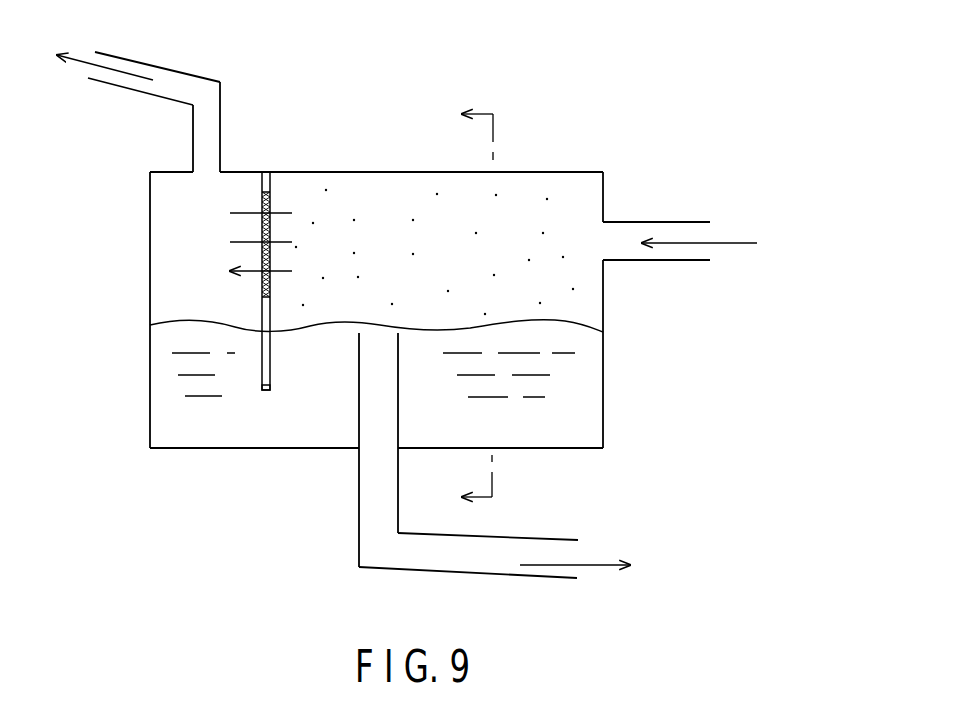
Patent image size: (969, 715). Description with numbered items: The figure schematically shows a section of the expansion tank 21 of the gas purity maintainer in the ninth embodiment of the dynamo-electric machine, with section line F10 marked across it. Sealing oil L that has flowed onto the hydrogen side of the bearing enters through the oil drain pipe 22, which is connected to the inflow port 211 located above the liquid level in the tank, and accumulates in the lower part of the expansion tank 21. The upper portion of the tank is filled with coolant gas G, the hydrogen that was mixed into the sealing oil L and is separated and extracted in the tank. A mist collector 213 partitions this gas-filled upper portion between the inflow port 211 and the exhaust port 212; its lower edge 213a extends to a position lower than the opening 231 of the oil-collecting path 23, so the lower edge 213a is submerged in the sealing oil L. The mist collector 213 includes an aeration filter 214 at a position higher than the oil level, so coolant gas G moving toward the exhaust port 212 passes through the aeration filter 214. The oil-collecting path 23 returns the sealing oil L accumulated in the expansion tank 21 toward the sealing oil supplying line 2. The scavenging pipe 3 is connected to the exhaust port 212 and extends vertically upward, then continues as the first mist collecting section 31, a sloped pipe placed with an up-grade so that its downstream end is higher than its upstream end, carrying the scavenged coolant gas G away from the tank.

The sealing oil supplying line 2 is at (584, 569).
The scavenging pipe 3 is at (222, 117).
The first mist collecting section 31 is at (148, 64).
The expansion tank 21 is at (362, 171).
The inflow port 211 is at (607, 238).
The exhaust port 212 is at (210, 168).
The mist collector 213 is at (265, 170).
The lower edge 213a is at (265, 392).
The aeration filter 214 is at (262, 253).
The oil drain pipe 22 is at (678, 221).
The oil-collecting path 23 is at (536, 539).
The opening 231 is at (382, 331).
The coolant gas G is at (530, 178).
The sealing oil L is at (587, 382).
The section line F10 is at (457, 310).